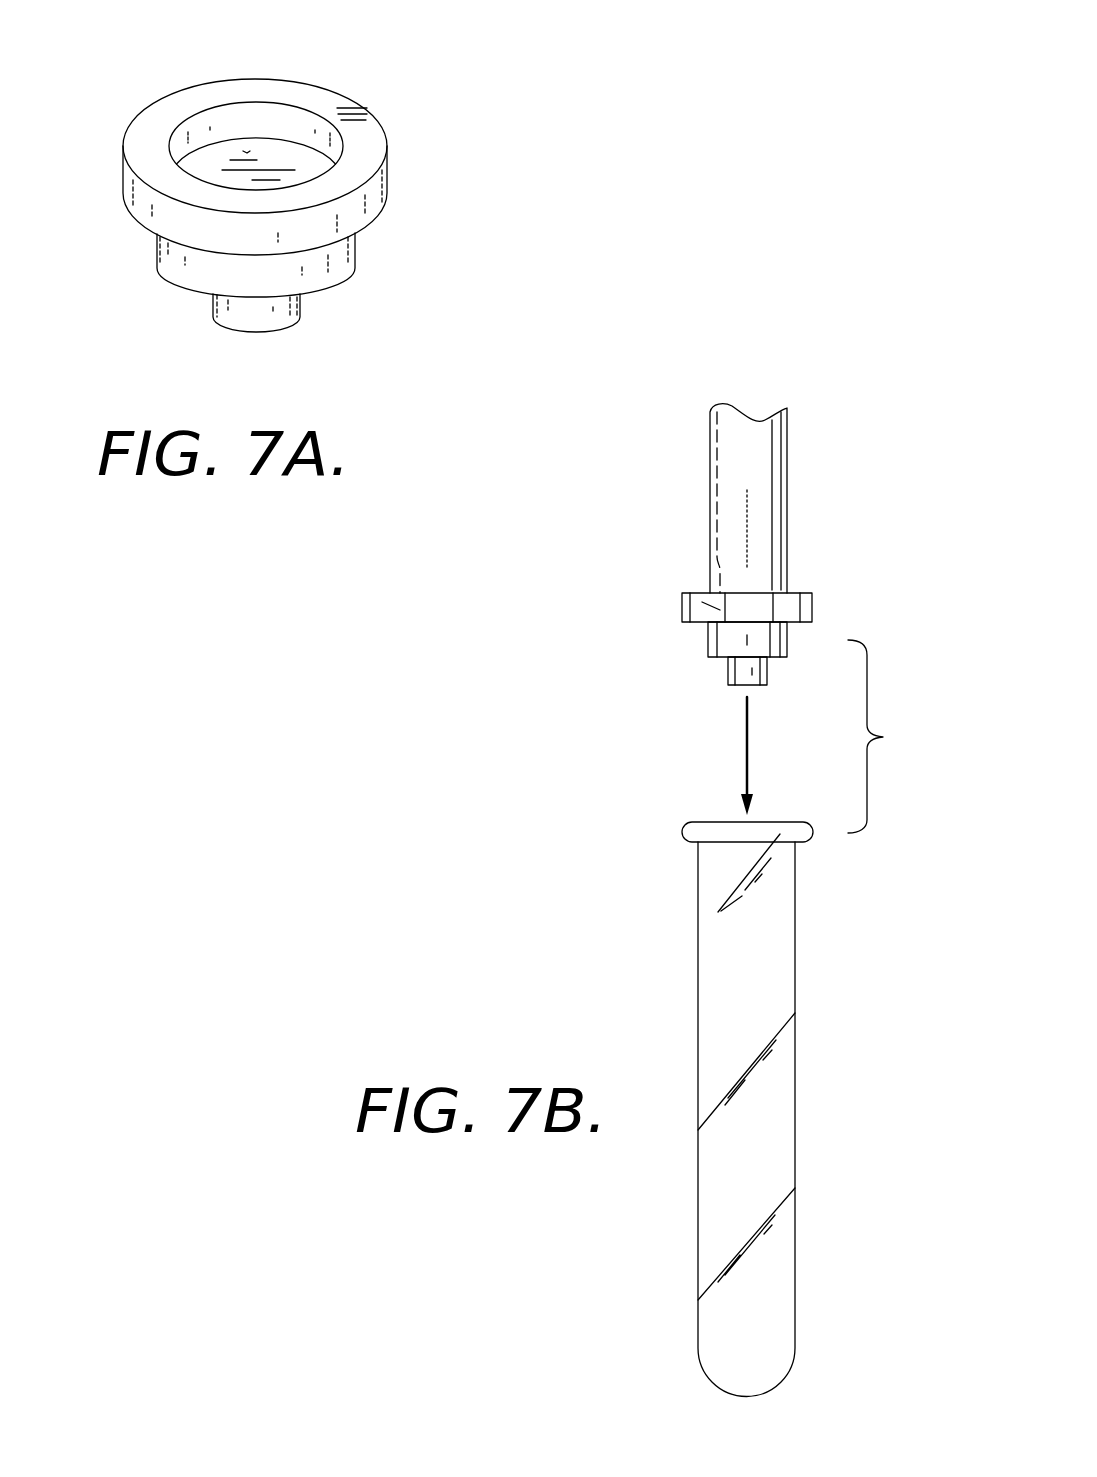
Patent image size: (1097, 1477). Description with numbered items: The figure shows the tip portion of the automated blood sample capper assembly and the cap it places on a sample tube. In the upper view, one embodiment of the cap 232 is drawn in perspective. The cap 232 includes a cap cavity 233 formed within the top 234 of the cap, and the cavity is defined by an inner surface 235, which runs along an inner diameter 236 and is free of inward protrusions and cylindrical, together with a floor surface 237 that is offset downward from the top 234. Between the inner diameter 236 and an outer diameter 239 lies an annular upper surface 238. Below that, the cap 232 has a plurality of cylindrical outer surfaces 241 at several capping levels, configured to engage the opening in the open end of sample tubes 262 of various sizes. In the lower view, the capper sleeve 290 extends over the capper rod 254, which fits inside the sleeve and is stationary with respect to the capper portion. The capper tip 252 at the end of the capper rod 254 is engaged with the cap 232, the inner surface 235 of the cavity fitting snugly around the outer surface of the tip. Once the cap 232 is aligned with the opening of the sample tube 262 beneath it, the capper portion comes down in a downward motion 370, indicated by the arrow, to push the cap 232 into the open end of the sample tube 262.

In FIG. 7A, the cap 232 is at (111, 162).
In FIG. 7B, the cap 232 is at (820, 603).
In FIG. 7A, the cap cavity 233 is at (270, 148).
In FIG. 7A, the top 234 is at (187, 74).
In FIG. 7A, the inner surface 235 is at (299, 123).
In FIG. 7A, the inner diameter 236 is at (293, 122).
In FIG. 7A, the floor surface 237 is at (221, 158).
In FIG. 7A, the annular upper surface 238 is at (362, 143).
In FIG. 7A, the outer diameter 239 is at (373, 183).
In FIG. 7A, the outer surfaces 241 is at (279, 319).
In FIG. 7B, the capper sleeve 290 is at (705, 468).
In FIG. 7B, the capper rod 254 is at (708, 557).
In FIG. 7B, the capper tip 252 is at (682, 603).
In FIG. 7B, the downward motion 370 is at (840, 736).
In FIG. 7B, the sample tube 262 is at (787, 1130).